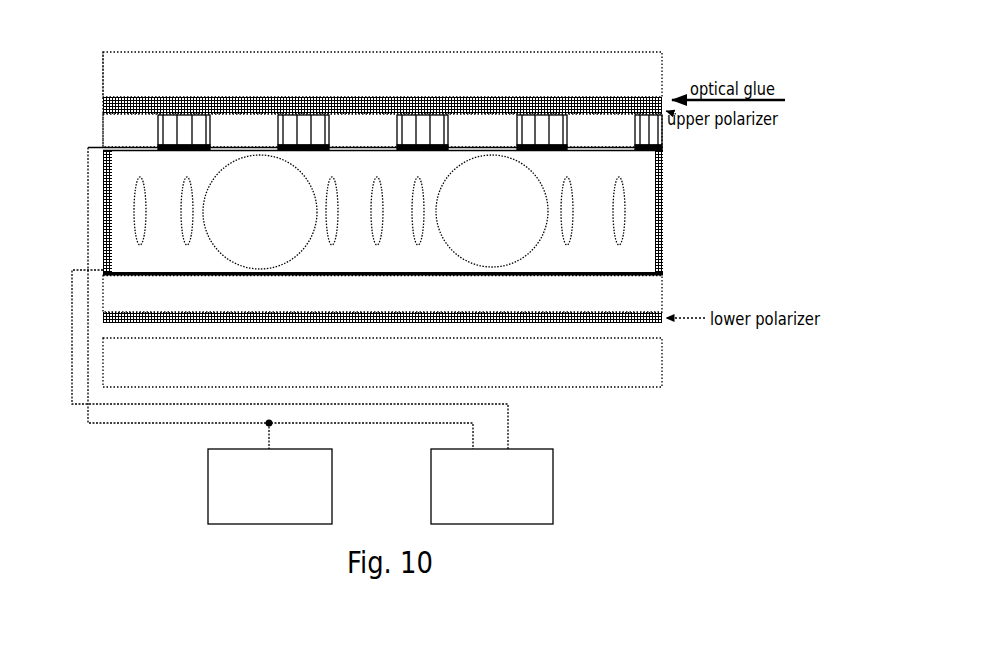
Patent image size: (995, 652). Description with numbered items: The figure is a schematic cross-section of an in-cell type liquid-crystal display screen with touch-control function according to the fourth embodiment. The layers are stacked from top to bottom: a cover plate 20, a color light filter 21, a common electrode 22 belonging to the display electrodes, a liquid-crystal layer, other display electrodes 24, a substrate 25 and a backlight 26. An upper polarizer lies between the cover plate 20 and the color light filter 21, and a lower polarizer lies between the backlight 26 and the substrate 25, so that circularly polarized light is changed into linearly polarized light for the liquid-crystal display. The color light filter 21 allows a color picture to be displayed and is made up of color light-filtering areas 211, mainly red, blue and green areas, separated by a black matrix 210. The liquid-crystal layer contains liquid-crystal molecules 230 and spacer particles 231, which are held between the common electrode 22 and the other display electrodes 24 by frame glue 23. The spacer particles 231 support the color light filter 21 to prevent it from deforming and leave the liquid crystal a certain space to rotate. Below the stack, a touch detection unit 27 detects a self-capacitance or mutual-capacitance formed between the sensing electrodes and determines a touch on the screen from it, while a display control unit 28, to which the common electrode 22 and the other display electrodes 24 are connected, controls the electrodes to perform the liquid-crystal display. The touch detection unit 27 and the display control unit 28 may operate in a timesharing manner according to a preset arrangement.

The cover plate 20 is at (672, 75).
The color light filter 21 is at (97, 135).
The black matrix 210 is at (178, 120).
The color light-filtering areas 211 is at (115, 128).
The common electrode 22 is at (667, 153).
The frame glue 23 is at (667, 207).
The liquid-crystal molecules 230 is at (631, 212).
The spacer particles 231 is at (549, 233).
The other display electrodes 24 is at (666, 273).
The substrate 25 is at (666, 295).
The backlight 26 is at (666, 363).
The touch detection unit 27 is at (207, 498).
The display control unit 28 is at (554, 490).